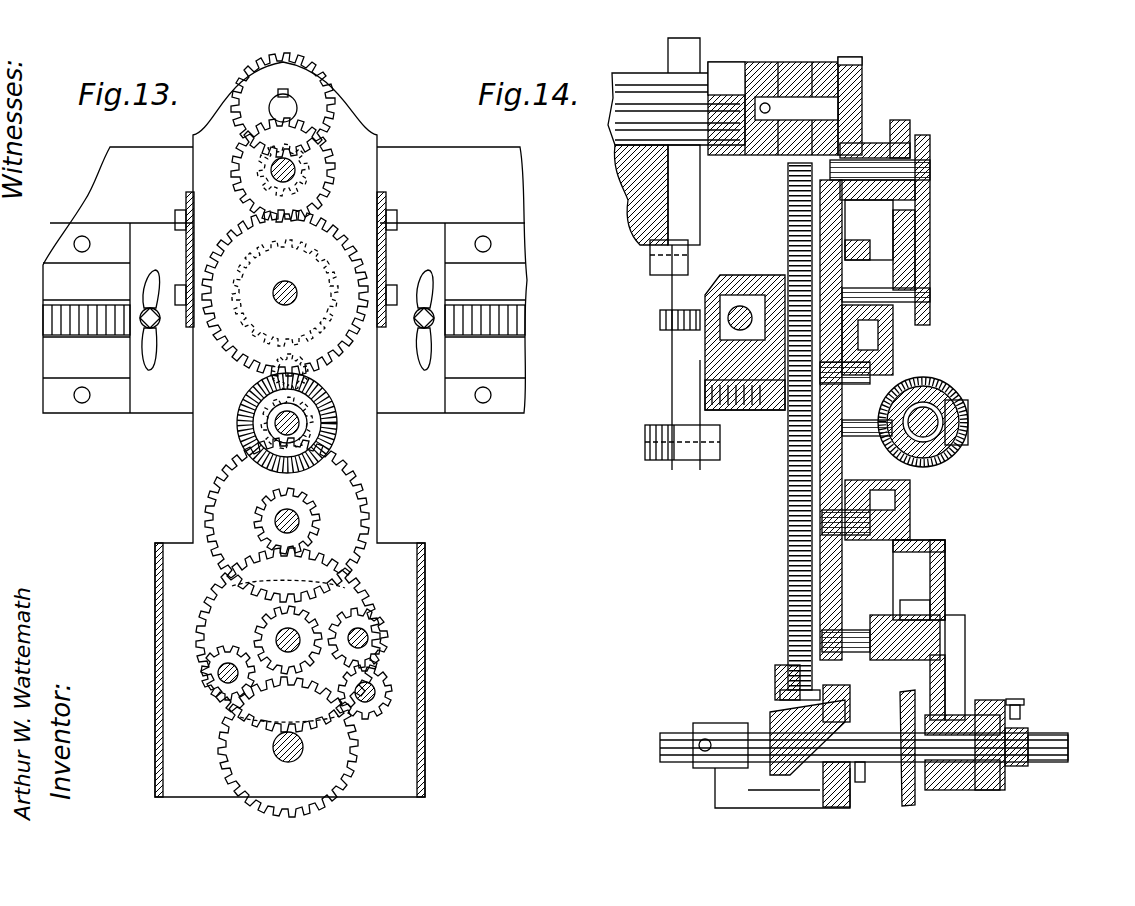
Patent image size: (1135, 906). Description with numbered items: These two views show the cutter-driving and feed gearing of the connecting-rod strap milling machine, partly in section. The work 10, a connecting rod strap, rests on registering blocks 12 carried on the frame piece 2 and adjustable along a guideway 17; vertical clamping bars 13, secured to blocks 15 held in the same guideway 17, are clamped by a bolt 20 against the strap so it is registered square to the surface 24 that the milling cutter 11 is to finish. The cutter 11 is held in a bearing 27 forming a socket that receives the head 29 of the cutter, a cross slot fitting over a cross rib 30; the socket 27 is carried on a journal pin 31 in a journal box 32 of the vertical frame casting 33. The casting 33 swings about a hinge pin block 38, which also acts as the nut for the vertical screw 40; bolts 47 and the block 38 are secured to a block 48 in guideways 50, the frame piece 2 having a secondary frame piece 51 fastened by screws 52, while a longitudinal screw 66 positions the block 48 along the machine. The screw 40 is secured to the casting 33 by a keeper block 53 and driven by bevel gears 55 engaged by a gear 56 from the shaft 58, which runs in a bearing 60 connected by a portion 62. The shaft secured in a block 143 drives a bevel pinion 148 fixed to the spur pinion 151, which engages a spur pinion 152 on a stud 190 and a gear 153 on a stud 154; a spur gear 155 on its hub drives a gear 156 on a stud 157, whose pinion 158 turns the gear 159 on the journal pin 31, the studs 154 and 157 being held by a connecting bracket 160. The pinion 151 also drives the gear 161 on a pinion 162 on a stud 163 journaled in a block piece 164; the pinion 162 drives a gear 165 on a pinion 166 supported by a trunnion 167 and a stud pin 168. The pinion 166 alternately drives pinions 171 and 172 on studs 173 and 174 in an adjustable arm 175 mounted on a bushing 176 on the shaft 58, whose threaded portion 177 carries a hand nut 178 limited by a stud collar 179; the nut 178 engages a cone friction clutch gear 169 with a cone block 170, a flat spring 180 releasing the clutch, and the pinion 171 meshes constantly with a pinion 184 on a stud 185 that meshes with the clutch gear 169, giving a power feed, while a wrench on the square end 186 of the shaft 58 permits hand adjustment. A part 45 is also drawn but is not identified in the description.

In FIG. 14, the frame piece 2 is at (718, 280).
In FIG. 14, the connecting rod strap 10 is at (630, 180).
In FIG. 14, the milling cutter 11 is at (625, 62).
In FIG. 14, the registering blocks 12 is at (652, 262).
In FIG. 14, the vertical clamping bars 13 is at (672, 50).
In FIG. 14, the blocks 15 is at (660, 300).
In FIG. 14, the guideway 17 is at (705, 378).
In FIG. 14, the bolt 20 is at (645, 458).
In FIG. 13, the surface 24 is at (438, 147).
In FIG. 14, the bearing socket 27 is at (782, 62).
In FIG. 14, the head of the milling cutter 29 is at (720, 80).
In FIG. 14, the cross rib 30 is at (735, 95).
In FIG. 13, the journal pin 31 is at (292, 104).
In FIG. 14, the journal pin 31 is at (805, 108).
In FIG. 14, the journal box 32 is at (820, 62).
In FIG. 13, the vertical frame casting 33 is at (387, 188).
In FIG. 14, the vertical frame casting 33 is at (932, 205).
In FIG. 14, the hinge pin block 38 is at (728, 322).
In FIG. 14, the vertical screw 40 is at (790, 590).
In FIG. 13, the handle 45 is at (416, 333).
In FIG. 14, the handle 45 is at (780, 412).
In FIG. 13, the bolts 47 is at (155, 325).
In FIG. 14, the block 48 is at (760, 230).
In FIG. 14, the guideways 50 is at (760, 268).
In FIG. 13, the secondary frame piece 51 is at (85, 413).
In FIG. 14, the secondary frame piece 51 is at (705, 268).
In FIG. 13, the screws 52 is at (86, 240).
In FIG. 14, the screws 52 is at (722, 230).
In FIG. 14, the keeper block 53 is at (790, 665).
In FIG. 14, the bevel gears 55 is at (775, 700).
In FIG. 14, the gear 56 is at (768, 770).
In FIG. 14, the shaft 58 is at (858, 760).
In FIG. 14, the bearing 60 is at (722, 768).
In FIG. 14, the connecting portion 62 is at (790, 798).
In FIG. 13, the longitudinal screw 66 is at (43, 322).
In FIG. 14, the longitudinal screw 66 is at (730, 322).
In FIG. 13, the block 143 is at (300, 418).
In FIG. 14, the block 143 is at (968, 445).
In FIG. 13, the bevel pinion 148 is at (330, 436).
In FIG. 14, the bevel pinion 148 is at (915, 465).
In FIG. 13, the spur pinion 151 is at (242, 432).
In FIG. 14, the spur pinion 151 is at (942, 457).
In FIG. 13, the spur pinion 152 is at (259, 401).
In FIG. 14, the spur pinion 152 is at (895, 338).
In FIG. 13, the gear 153 is at (258, 268).
In FIG. 14, the gear 153 is at (868, 216).
In FIG. 13, the stud 154 is at (285, 283).
In FIG. 14, the stud 154 is at (932, 295).
In FIG. 13, the spur gear 155 is at (352, 243).
In FIG. 14, the spur gear 155 is at (917, 255).
In FIG. 13, the gear 156 is at (245, 150).
In FIG. 14, the gear 156 is at (912, 125).
In FIG. 13, the stud 157 is at (292, 165).
In FIG. 14, the stud 157 is at (932, 170).
In FIG. 13, the pinion 158 is at (312, 171).
In FIG. 14, the pinion 158 is at (917, 192).
In FIG. 13, the gear 159 is at (298, 78).
In FIG. 14, the gear 159 is at (864, 75).
In FIG. 13, the connecting bracket 160 is at (390, 256).
In FIG. 14, the connecting bracket 160 is at (932, 232).
In FIG. 13, the gear 161 is at (335, 497).
In FIG. 14, the gear 161 is at (820, 490).
In FIG. 13, the pinion 162 is at (307, 521).
In FIG. 14, the pinion 162 is at (947, 558).
In FIG. 13, the stud 163 is at (275, 520).
In FIG. 14, the stud 163 is at (912, 525).
In FIG. 13, the block piece 164 is at (426, 638).
In FIG. 14, the block piece 164 is at (955, 585).
In FIG. 14, the gear 165 is at (865, 770).
In FIG. 13, the pinion 166 is at (265, 620).
In FIG. 14, the pinion 166 is at (925, 612).
In FIG. 13, the trunnion 167 is at (288, 626).
In FIG. 14, the trunnion 167 is at (935, 640).
In FIG. 14, the stud pin 168 is at (835, 640).
In FIG. 13, the cone friction clutch gear 169 is at (308, 780).
In FIG. 14, the cone friction clutch gear 169 is at (917, 800).
In FIG. 14, the cone block 170 is at (880, 800).
In FIG. 13, the pinion 171 is at (357, 630).
In FIG. 13, the pinion 172 is at (200, 645).
In FIG. 13, the stud 173 is at (382, 632).
In FIG. 13, the stud 174 is at (215, 698).
In FIG. 14, the adjustable arm 175 is at (967, 648).
In FIG. 14, the bushing 176 is at (960, 718).
In FIG. 13, the threaded portion 177 is at (303, 750).
In FIG. 14, the threaded portion 177 is at (1030, 760).
In FIG. 14, the hand nut 178 is at (1007, 785).
In FIG. 14, the stud collar 179 is at (1026, 710).
In FIG. 14, the flat spring 180 is at (950, 680).
In FIG. 13, the pinion 184 is at (385, 690).
In FIG. 13, the stud 185 is at (380, 700).
In FIG. 14, the square end 186 is at (1050, 745).
In FIG. 13, the stud 190 is at (318, 388).
In FIG. 14, the stud 190 is at (872, 372).